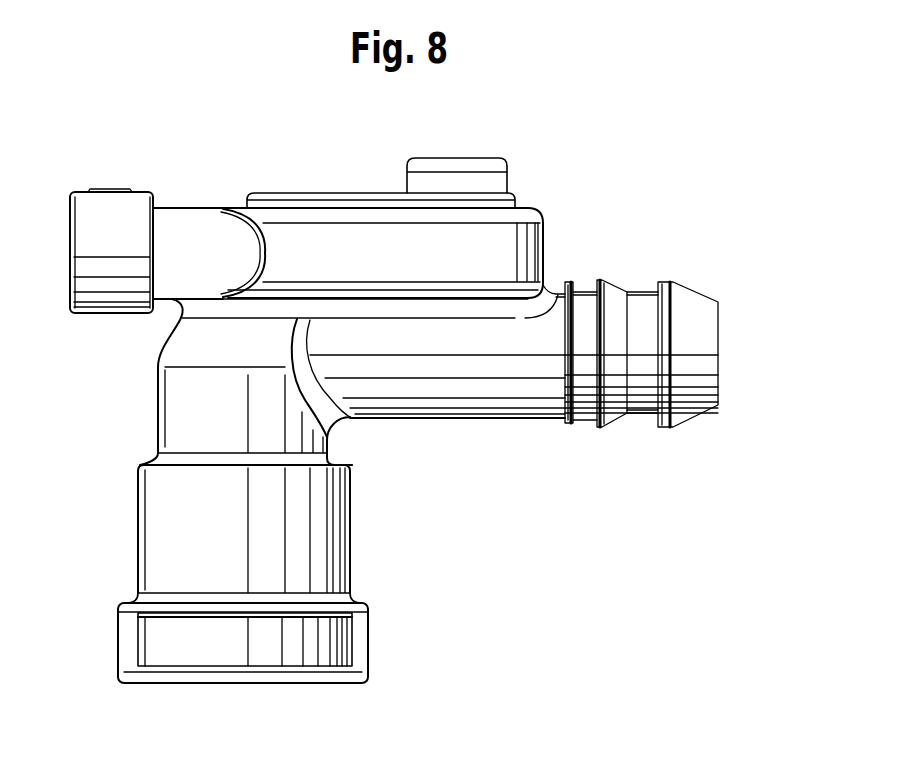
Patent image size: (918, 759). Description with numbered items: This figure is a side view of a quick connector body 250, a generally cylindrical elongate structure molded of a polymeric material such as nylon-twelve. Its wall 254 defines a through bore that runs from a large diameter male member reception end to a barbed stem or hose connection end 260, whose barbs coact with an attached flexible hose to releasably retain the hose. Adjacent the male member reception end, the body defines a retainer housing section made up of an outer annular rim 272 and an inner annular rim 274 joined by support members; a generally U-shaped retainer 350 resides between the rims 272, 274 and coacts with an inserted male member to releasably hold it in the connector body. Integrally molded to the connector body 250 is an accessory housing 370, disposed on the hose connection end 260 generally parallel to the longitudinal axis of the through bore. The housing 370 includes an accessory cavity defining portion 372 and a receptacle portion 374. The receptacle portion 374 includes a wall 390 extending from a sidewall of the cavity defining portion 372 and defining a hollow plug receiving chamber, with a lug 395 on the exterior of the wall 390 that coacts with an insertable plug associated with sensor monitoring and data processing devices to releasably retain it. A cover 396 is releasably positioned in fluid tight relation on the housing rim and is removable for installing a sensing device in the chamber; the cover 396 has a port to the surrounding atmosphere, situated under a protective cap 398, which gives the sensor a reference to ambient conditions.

The connector body 250 is at (370, 558).
The wall 254 is at (494, 408).
The hose connection end 260 is at (693, 406).
The outer annular rim 272 is at (368, 680).
The inner annular rim 274 is at (365, 600).
The retainer 350 is at (297, 650).
The accessory housing 370 is at (342, 180).
The accessory cavity defining portion 372 is at (560, 248).
The receptacle portion 374 is at (204, 195).
The wall 390 is at (108, 191).
The lug 395 is at (172, 207).
The cover 396 is at (375, 192).
The protective cap 398 is at (455, 157).